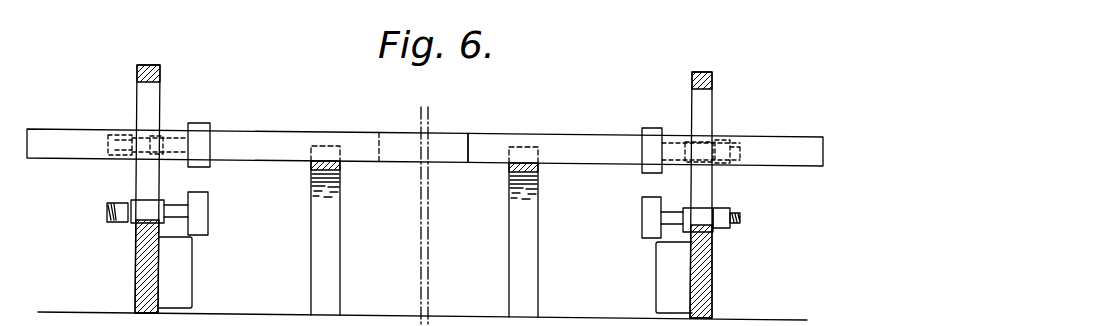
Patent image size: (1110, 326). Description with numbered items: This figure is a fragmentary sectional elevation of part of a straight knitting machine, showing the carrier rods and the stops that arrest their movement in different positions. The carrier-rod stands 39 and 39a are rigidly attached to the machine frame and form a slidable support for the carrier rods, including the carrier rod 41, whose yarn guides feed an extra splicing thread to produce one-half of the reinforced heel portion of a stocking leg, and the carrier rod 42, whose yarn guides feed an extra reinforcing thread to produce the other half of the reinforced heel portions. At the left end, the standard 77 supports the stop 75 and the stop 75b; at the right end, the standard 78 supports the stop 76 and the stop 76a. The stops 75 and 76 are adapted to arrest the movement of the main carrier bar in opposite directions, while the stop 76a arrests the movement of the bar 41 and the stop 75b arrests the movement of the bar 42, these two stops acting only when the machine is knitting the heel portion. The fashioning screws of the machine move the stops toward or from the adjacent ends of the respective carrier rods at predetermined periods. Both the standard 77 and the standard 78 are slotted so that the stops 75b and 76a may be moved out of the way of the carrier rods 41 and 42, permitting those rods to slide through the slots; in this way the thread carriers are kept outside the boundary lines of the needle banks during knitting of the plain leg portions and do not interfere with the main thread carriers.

The carrier-rod stand 39 is at (332, 238).
The carrier-rod stand 39a is at (525, 238).
The carrier rod 41 is at (583, 150).
The carrier rod 42 is at (72, 145).
The carrier rod stop 75 is at (210, 124).
The carrier rod stop 75b is at (200, 222).
The carrier rod stop 76 is at (656, 130).
The carrier rod stop 76a is at (648, 219).
The standard 77 is at (160, 72).
The standard 78 is at (712, 78).